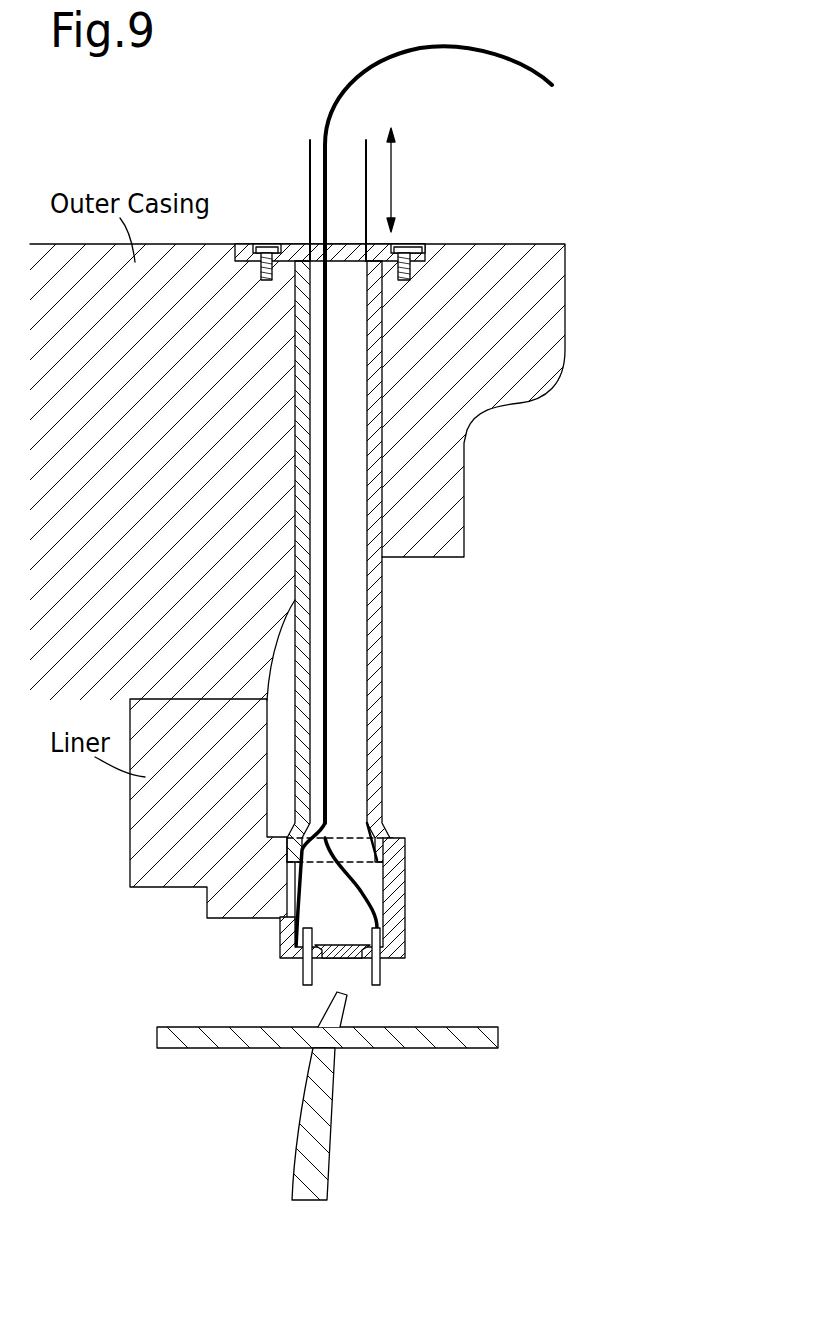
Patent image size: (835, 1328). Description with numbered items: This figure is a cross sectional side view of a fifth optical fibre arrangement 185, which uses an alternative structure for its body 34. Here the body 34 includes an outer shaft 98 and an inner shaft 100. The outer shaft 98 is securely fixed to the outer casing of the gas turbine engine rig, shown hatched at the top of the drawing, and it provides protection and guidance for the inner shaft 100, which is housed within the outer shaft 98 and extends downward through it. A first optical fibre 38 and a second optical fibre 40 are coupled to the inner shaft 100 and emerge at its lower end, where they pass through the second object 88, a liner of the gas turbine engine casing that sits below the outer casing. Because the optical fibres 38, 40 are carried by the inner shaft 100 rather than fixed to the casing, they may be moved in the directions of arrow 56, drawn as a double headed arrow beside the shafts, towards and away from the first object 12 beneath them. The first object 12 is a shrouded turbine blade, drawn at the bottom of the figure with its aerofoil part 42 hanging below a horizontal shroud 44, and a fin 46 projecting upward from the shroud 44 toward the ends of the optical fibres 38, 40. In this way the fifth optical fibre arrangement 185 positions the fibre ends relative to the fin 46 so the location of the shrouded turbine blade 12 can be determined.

The first object 12 is at (593, 1073).
The body 34 is at (386, 700).
The first optical fibre 38 is at (303, 976).
The second optical fibre 40 is at (380, 975).
The aerofoil part 42 is at (318, 1162).
The shroud 44 is at (487, 1037).
The fin 46 is at (343, 1009).
The arrow 56 is at (392, 197).
The second object 88 is at (395, 898).
The outer shaft 98 is at (382, 597).
The inner shaft 100 is at (295, 548).
The fifth optical fibre arrangement 185 is at (573, 582).